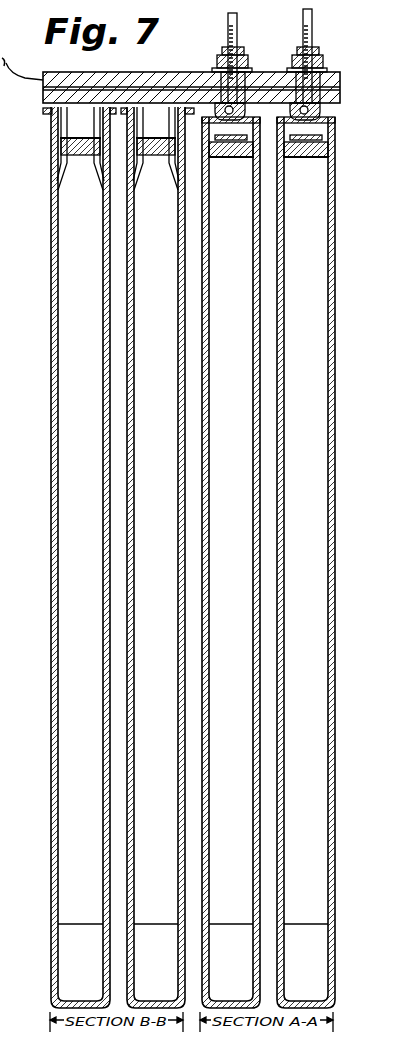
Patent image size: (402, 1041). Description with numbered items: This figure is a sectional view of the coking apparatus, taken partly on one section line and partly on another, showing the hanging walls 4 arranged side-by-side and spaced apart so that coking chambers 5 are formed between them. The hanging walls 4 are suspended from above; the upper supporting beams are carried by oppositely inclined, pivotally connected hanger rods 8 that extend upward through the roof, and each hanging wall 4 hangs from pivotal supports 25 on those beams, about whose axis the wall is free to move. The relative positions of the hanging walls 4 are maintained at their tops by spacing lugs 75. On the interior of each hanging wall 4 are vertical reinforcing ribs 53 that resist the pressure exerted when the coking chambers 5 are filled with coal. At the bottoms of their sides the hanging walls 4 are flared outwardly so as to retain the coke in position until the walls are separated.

The hanging wall 4 is at (52, 582).
The coking chamber 5 is at (115, 443).
The hanger rod 8 is at (303, 18).
The pivotal support 25 is at (320, 113).
The vertical reinforcing rib 53 is at (70, 915).
The spacing lug 75 is at (140, 105).